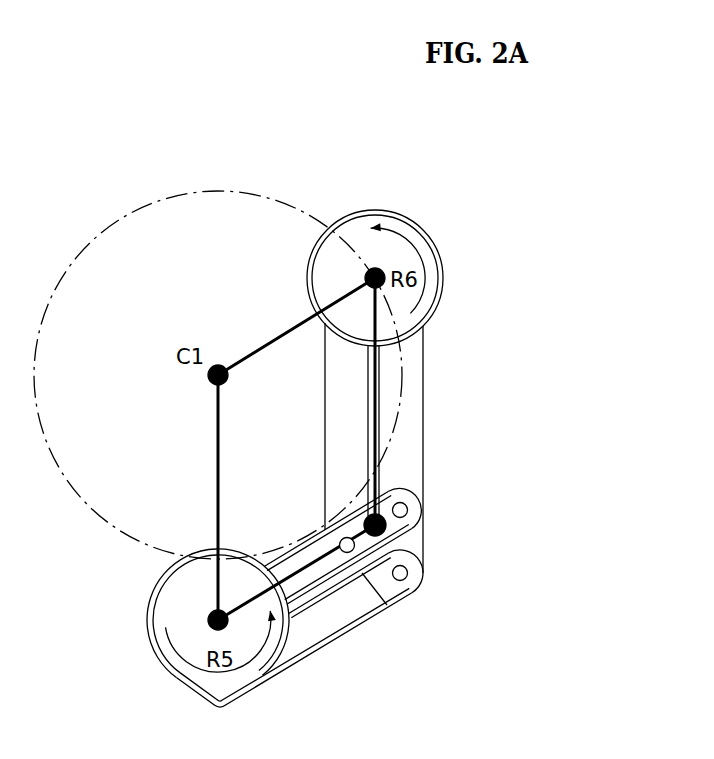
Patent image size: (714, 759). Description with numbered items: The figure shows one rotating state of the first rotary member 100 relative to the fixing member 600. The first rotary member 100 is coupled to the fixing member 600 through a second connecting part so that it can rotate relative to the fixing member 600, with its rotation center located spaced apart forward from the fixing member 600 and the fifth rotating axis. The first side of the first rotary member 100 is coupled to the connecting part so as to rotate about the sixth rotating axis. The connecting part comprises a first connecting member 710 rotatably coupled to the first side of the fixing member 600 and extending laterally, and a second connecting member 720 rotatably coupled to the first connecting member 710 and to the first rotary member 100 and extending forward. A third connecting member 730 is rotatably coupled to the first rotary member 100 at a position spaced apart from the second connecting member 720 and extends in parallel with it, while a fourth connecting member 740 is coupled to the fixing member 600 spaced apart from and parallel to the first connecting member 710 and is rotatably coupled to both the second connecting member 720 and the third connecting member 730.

The first rotary member 100 is at (364, 232).
The fixing member 600 is at (173, 615).
The first connecting member 710 is at (324, 627).
The second connecting member 720 is at (410, 442).
The third connecting member 730 is at (347, 383).
The fourth connecting member 740 is at (342, 562).